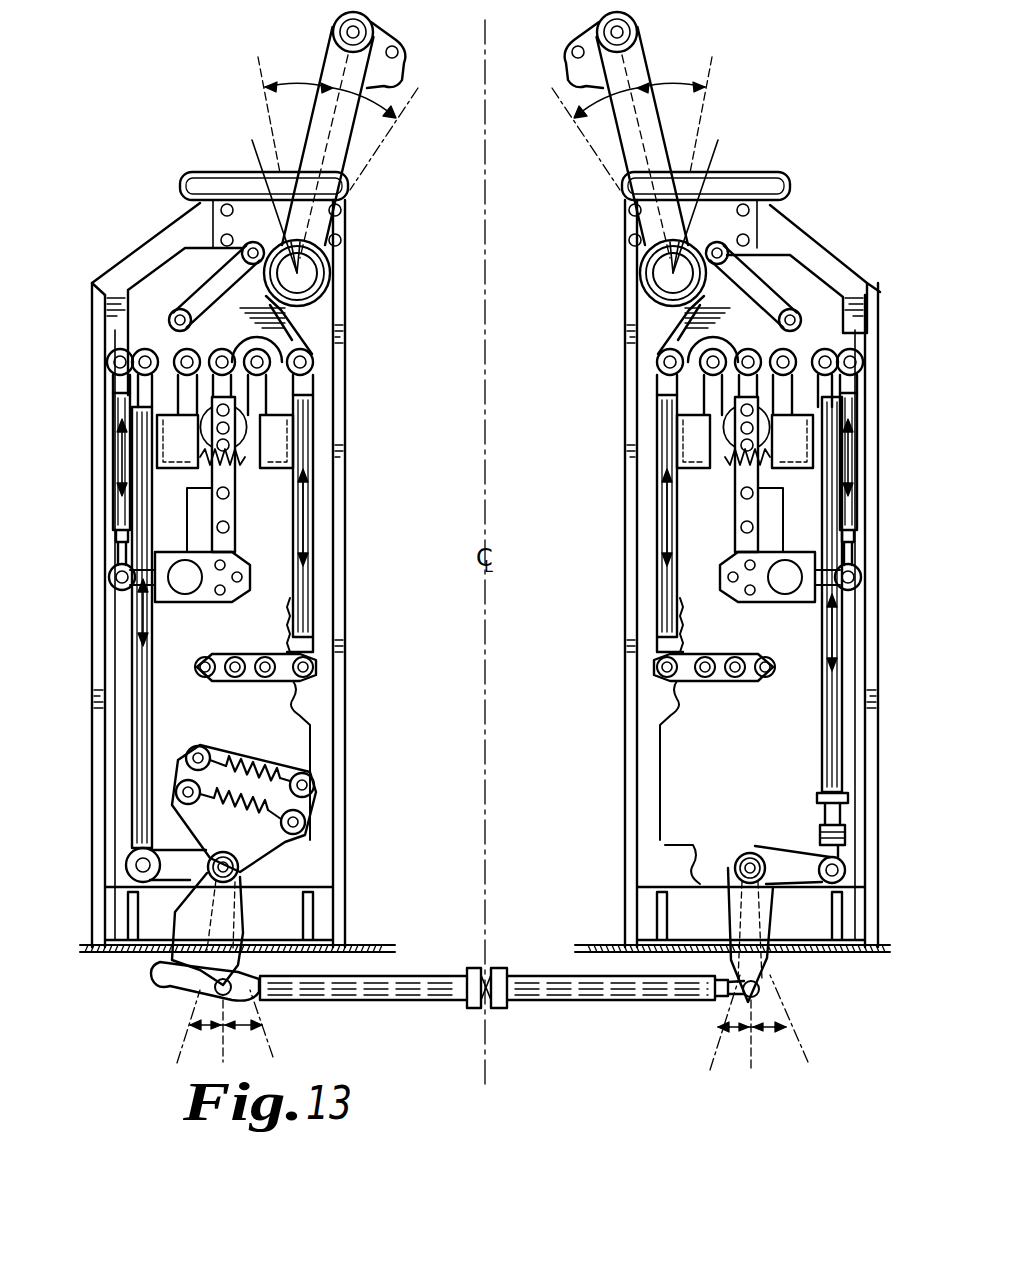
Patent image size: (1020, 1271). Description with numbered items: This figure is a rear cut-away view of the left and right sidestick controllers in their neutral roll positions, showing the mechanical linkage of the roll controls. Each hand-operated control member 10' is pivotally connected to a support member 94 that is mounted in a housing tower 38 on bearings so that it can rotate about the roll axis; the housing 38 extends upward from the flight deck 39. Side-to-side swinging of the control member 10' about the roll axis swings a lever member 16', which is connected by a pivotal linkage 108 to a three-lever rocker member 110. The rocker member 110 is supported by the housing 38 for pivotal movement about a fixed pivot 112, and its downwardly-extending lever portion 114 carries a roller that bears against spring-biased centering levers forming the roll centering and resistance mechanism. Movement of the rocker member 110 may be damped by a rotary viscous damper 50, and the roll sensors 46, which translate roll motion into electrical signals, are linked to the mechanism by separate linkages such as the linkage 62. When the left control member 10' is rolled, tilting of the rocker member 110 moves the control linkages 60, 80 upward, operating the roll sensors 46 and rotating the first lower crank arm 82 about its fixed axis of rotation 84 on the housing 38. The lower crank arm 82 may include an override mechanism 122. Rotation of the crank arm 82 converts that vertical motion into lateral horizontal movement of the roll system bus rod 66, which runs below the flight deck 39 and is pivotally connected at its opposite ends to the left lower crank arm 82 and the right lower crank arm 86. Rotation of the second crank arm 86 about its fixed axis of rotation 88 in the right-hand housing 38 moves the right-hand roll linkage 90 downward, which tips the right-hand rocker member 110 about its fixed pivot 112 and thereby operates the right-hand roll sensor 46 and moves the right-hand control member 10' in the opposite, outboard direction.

The control member 10' is at (491, 135).
The lever member 16' is at (505, 165).
The housing tower 38 is at (340, 703).
The flight deck 39 is at (370, 947).
The roll sensor 46 is at (210, 598).
The roll viscous damper 50 is at (237, 690).
The control linkage 60 is at (117, 428).
The linkage 62 is at (307, 588).
The roll system bus rod 66 is at (377, 990).
The linking rod 80 is at (140, 657).
The first lower crank arm 82 is at (163, 978).
The fixed axis of rotation 84 is at (243, 868).
The second lower crank arm 86 is at (772, 900).
The fixed axis of rotation 88 is at (750, 847).
The right-hand roll linkage 90 is at (830, 747).
The support member 94 is at (313, 267).
The pivotal linkage 108 is at (212, 286).
The rocker member 110 is at (293, 336).
The fixed pivot 112 is at (224, 366).
The downwardly-extending lever portion 114 is at (227, 482).
The override mechanism 122 is at (266, 750).